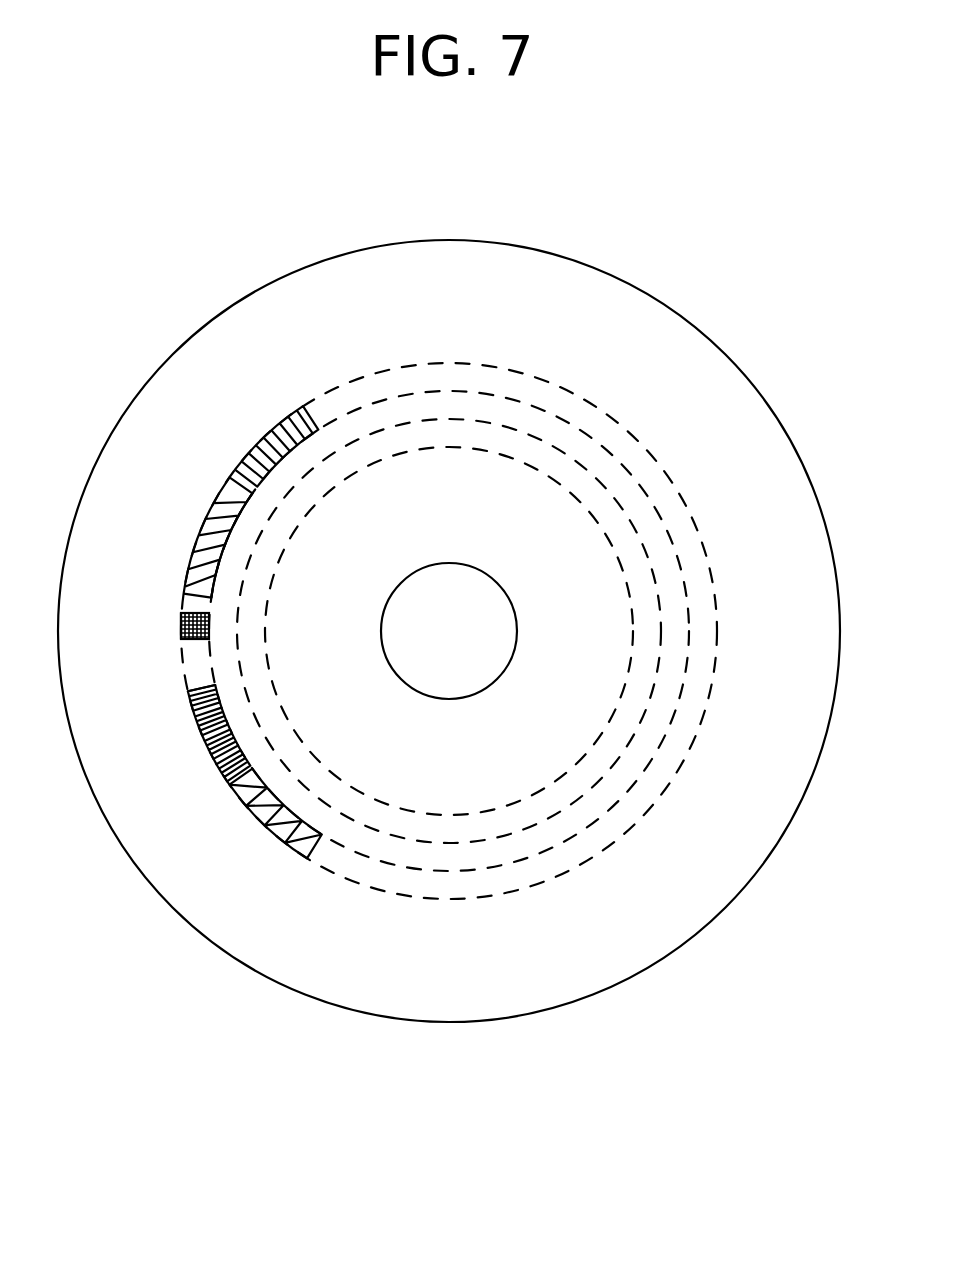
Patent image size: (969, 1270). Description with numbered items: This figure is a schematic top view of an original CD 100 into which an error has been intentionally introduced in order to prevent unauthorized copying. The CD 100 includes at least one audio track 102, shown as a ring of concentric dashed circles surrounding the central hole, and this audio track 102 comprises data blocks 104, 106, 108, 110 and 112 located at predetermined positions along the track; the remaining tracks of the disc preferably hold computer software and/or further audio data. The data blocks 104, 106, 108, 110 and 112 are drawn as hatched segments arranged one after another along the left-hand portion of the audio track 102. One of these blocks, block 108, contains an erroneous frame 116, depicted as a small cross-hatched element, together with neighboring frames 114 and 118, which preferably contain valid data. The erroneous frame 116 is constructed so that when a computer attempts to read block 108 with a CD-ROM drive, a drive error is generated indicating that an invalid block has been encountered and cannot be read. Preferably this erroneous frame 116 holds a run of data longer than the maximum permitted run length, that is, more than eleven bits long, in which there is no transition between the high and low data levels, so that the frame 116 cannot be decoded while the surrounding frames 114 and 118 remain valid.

The original CD 100 is at (588, 262).
The audio track 102 is at (674, 530).
The data block 104 is at (288, 817).
The data block 106 is at (243, 750).
The data block 108 is at (212, 632).
The data block 110 is at (237, 510).
The data block 112 is at (290, 447).
The frame 114 is at (185, 667).
The erroneous frame 116 is at (181, 627).
The frame 118 is at (183, 592).